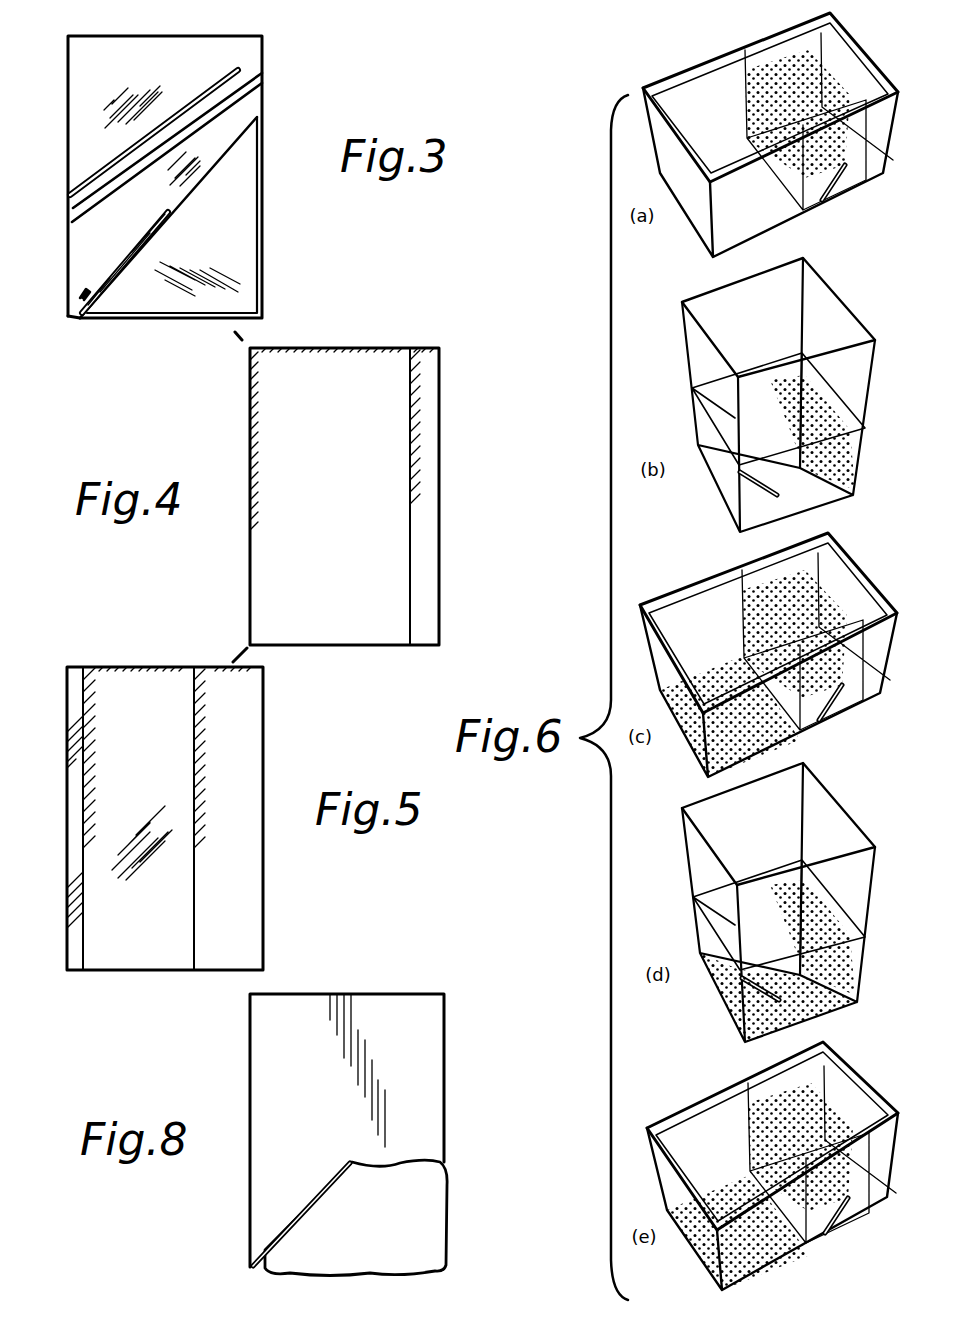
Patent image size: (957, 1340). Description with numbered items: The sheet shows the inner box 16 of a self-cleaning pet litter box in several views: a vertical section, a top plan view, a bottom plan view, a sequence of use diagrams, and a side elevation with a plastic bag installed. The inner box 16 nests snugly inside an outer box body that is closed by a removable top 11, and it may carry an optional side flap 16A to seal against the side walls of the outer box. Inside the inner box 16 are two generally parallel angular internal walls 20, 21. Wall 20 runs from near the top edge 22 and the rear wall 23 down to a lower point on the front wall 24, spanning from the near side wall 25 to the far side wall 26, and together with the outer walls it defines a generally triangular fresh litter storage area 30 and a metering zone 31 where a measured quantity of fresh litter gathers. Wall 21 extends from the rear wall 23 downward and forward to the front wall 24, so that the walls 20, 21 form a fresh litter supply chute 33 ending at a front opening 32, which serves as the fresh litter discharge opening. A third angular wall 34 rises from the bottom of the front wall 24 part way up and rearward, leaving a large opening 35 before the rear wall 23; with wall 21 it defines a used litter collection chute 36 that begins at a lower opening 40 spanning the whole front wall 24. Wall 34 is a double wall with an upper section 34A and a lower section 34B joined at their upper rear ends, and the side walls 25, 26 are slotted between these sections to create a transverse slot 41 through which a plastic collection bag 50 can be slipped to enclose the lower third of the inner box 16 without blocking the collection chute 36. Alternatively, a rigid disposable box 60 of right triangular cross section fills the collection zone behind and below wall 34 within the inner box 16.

In FIG. 6, the removable top 11 is at (728, 50).
In FIG. 3, the inner box 16 is at (263, 157).
In FIG. 8, the inner box 16 is at (445, 1070).
In FIG. 4, the side flap 16A is at (235, 338).
In FIG. 3, the internal wall 20 is at (158, 130).
In FIG. 4, the internal wall 20 is at (347, 365).
In FIG. 3, the internal wall 21 is at (235, 100).
In FIG. 4, the internal wall 21 is at (418, 362).
In FIG. 5, the internal wall 21 is at (237, 900).
In FIG. 3, the top edge 22 is at (205, 36).
In FIG. 3, the rear wall 23 is at (265, 100).
In FIG. 4, the rear wall 23 is at (442, 460).
In FIG. 5, the rear wall 23 is at (263, 728).
In FIG. 3, the front wall 24 is at (68, 157).
In FIG. 4, the front wall 24 is at (248, 452).
In FIG. 5, the front wall 24 is at (65, 797).
In FIG. 4, the near side wall 25 is at (378, 647).
In FIG. 8, the near side wall 25 is at (267, 1018).
In FIG. 4, the far side wall 26 is at (303, 343).
In FIG. 3, the fresh litter storage area 30 is at (95, 57).
In FIG. 3, the metering zone 31 is at (228, 47).
In FIG. 3, the front opening 32 is at (75, 215).
In FIG. 3, the fresh litter supply chute 33 is at (88, 186).
In FIG. 3, the angular wall 34 is at (73, 317).
In FIG. 3, the upper section 34A is at (152, 233).
In FIG. 3, the lower section 34B is at (165, 233).
In FIG. 5, the lower section 34B is at (160, 680).
In FIG. 3, the large opening 35 is at (215, 160).
In FIG. 3, the used litter collection chute 36 is at (165, 212).
In FIG. 3, the lower opening 40 is at (78, 272).
In FIG. 3, the transverse slot 41 is at (110, 277).
In FIG. 8, the transverse slot 41 is at (262, 1260).
In FIG. 8, the collection bag 50 is at (453, 1233).
In FIG. 3, the disposable box 60 is at (194, 215).